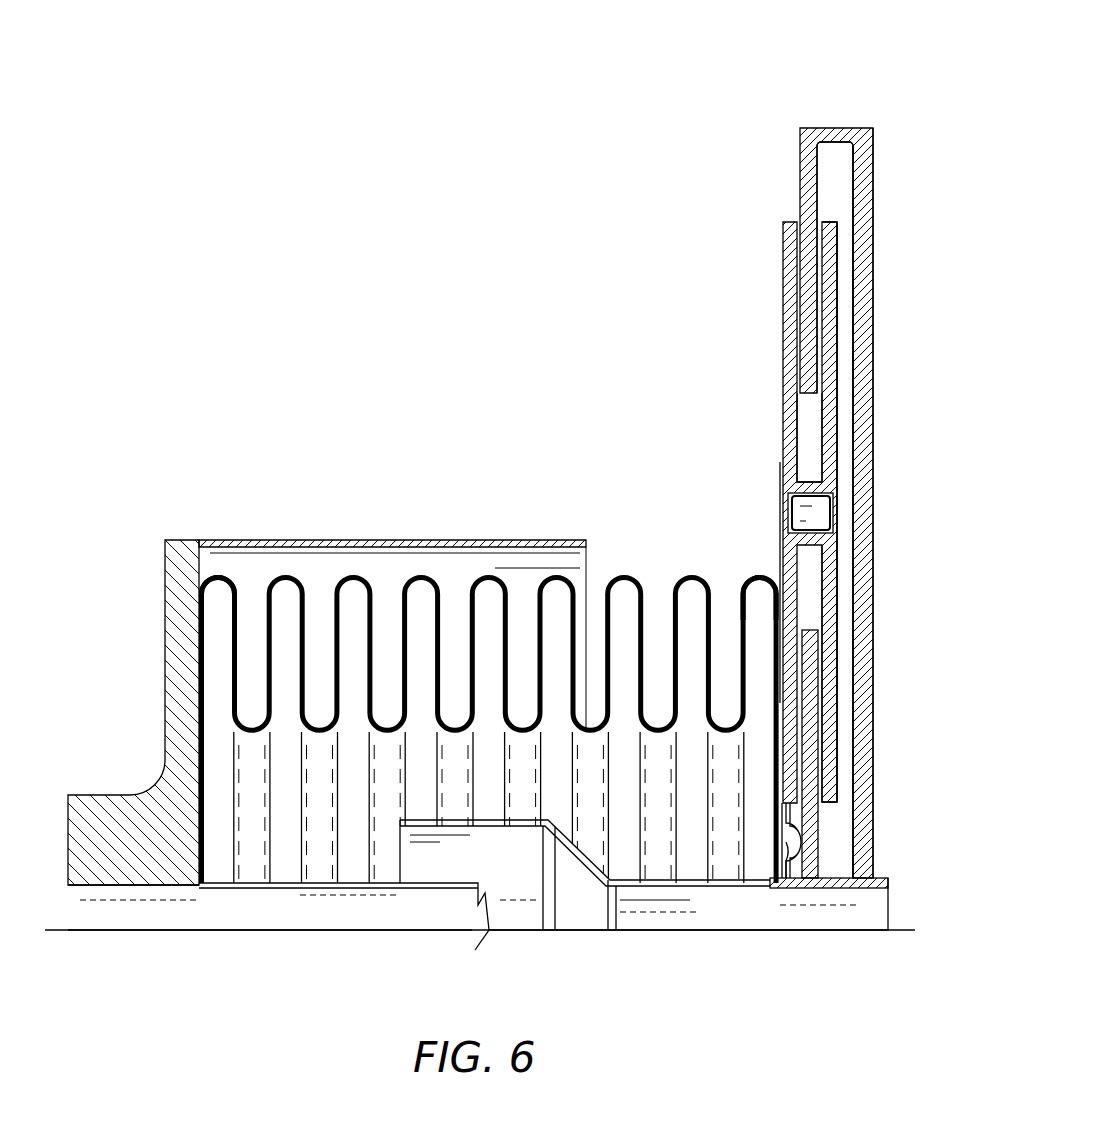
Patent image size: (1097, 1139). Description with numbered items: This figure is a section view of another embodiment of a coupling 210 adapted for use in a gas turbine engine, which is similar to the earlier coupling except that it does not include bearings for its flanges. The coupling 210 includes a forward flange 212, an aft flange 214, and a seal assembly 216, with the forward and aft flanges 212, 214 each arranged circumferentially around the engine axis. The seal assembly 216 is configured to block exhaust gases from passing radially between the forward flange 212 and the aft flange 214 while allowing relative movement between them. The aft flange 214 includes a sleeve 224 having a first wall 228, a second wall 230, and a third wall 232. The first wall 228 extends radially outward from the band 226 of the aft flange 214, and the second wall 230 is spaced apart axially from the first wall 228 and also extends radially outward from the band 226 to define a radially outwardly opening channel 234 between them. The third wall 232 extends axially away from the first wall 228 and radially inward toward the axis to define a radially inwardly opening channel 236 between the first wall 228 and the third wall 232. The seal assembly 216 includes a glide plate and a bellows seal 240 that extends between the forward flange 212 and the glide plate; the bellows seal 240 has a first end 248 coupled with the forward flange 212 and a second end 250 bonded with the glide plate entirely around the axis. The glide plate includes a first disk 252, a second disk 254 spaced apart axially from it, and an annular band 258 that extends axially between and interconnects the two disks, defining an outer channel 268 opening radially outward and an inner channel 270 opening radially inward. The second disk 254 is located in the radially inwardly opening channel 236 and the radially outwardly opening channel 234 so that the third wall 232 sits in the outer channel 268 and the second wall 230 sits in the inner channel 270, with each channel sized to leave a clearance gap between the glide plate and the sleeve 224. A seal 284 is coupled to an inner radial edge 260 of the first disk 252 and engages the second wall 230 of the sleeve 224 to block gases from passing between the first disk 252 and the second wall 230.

The coupling 210 is at (372, 254).
The forward flange 212 is at (114, 569).
The aft flange 214 is at (768, 116).
The seal assembly 216 is at (509, 421).
The sleeve 224 is at (851, 123).
The band 226 is at (568, 863).
The first wall 228 is at (904, 186).
The second wall 230 is at (826, 847).
The third wall 232 is at (824, 163).
The radially outwardly opening channel 234 is at (845, 705).
The radially inwardly opening channel 236 is at (846, 303).
The bellows seal 240 is at (621, 570).
The first end 248 is at (215, 576).
The second end 250 is at (768, 569).
The first disk 252 is at (779, 330).
The second disk 254 is at (845, 275).
The annular band 258 is at (793, 486).
The inner radial edge 260 is at (777, 803).
The outer channel 268 is at (807, 480).
The inner channel 270 is at (809, 551).
The seal 284 is at (792, 866).